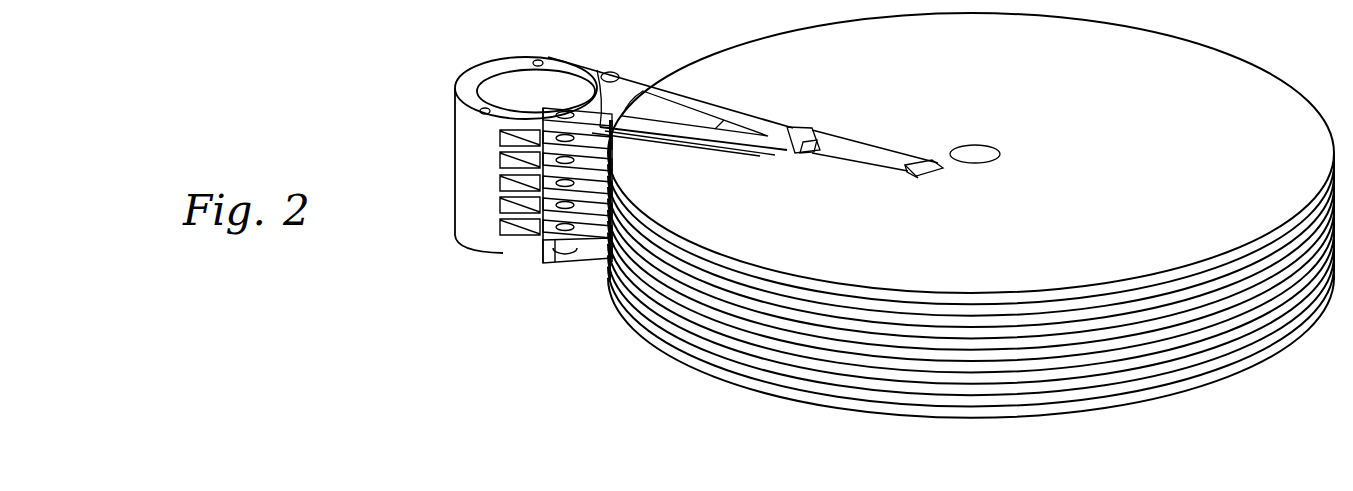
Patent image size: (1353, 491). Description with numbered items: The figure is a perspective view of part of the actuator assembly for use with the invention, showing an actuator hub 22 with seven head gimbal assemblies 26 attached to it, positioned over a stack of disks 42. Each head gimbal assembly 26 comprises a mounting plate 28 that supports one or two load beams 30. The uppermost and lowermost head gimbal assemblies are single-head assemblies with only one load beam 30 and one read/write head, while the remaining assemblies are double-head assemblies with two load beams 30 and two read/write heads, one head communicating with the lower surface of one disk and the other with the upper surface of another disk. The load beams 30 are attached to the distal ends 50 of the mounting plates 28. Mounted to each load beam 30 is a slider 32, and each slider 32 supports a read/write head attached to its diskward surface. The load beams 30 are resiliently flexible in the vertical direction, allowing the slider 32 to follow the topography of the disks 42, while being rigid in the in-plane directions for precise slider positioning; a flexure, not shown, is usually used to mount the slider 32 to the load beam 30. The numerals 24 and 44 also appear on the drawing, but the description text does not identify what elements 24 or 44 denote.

The hub 22 is at (455, 84).
The actuator arms 24 is at (505, 127).
The head gimbal assembly 26 is at (806, 91).
The mounting plate 28 is at (683, 86).
The load beam 30 is at (853, 143).
The slider 32 is at (938, 178).
The disks 42 is at (1178, 388).
The disk stack 44 is at (1161, 442).
The distal end of mounting plate 50 is at (737, 150).